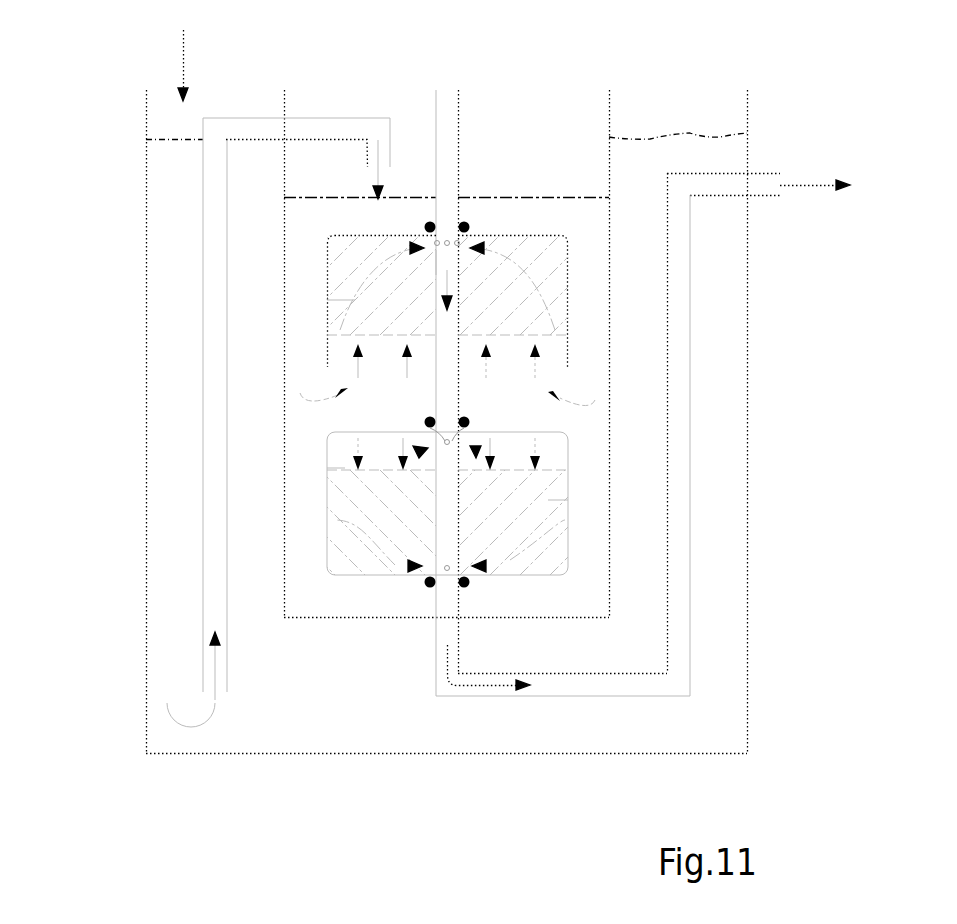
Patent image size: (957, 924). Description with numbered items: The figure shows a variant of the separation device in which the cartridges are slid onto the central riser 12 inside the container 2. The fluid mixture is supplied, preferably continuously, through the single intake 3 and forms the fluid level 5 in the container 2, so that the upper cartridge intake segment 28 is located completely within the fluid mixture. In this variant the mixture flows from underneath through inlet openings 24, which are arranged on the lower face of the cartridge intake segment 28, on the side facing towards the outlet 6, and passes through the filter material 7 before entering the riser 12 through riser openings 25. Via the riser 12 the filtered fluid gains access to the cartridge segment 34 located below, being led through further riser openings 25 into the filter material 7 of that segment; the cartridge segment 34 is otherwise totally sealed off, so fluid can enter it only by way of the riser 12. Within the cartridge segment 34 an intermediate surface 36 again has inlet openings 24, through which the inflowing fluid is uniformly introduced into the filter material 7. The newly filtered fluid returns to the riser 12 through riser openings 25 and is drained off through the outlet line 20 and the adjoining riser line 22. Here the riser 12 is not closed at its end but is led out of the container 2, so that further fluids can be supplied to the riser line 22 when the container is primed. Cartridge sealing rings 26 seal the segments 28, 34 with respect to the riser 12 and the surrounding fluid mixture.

The container 2 is at (612, 568).
The intake 3 is at (382, 143).
The fluid level 5 is at (320, 197).
The outlet 6 is at (447, 645).
The filter material 7 is at (525, 300).
The riser 12 is at (443, 265).
The outlet line 20 is at (558, 683).
The riser line 22 is at (678, 445).
The inlet openings 24 is at (353, 337).
The riser openings 25 is at (470, 247).
The cartridge sealing rings 26 is at (466, 227).
The cartridge intake segment 28 is at (355, 302).
The cartridge segment 34 is at (548, 500).
The intermediate surface 36 is at (345, 468).